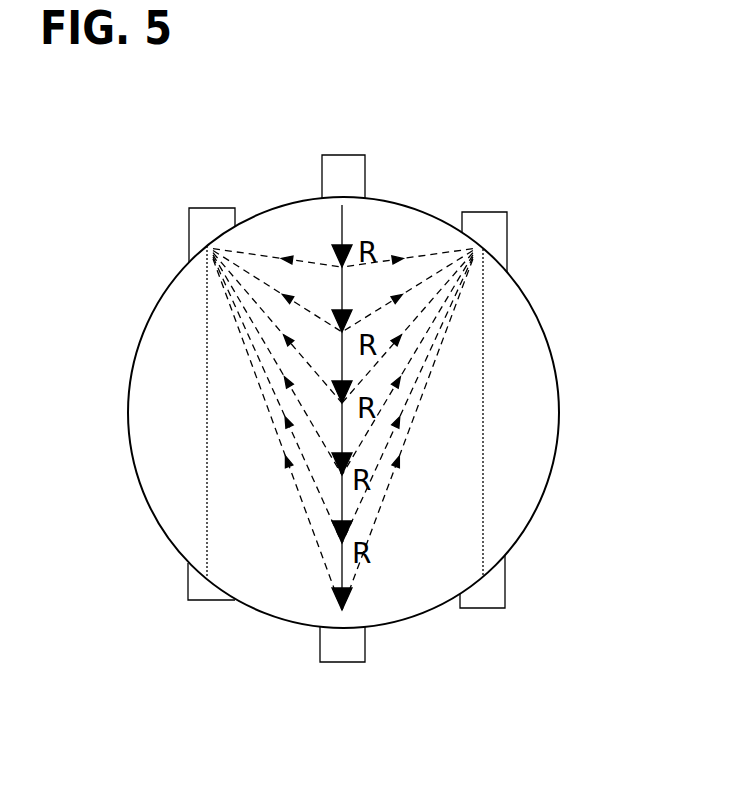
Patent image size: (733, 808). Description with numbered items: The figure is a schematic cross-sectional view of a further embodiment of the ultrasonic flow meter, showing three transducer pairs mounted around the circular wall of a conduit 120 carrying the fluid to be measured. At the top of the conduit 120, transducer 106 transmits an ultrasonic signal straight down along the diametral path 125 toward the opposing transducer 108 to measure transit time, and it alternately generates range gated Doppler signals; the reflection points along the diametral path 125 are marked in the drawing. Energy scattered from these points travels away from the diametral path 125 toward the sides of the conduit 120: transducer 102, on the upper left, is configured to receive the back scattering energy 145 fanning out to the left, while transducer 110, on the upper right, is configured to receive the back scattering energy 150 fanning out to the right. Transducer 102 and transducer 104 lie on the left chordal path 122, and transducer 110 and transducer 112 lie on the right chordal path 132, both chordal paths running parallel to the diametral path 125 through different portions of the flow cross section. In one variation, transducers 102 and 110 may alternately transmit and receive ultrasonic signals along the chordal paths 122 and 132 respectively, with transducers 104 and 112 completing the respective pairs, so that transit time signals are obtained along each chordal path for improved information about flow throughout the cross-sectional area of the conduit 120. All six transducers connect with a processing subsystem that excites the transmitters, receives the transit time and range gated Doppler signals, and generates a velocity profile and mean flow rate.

The transducer 102 is at (182, 223).
The transducer 104 is at (200, 602).
The transducer 106 is at (320, 168).
The transducer 108 is at (330, 648).
The transducer 110 is at (473, 212).
The transducer 112 is at (482, 610).
The conduit 120 is at (135, 480).
The chordal path 122 is at (200, 485).
The diametral path 125 is at (344, 223).
The chordal path 132 is at (486, 437).
The back scattering energy 145 is at (206, 315).
The back scattering energy 150 is at (428, 388).